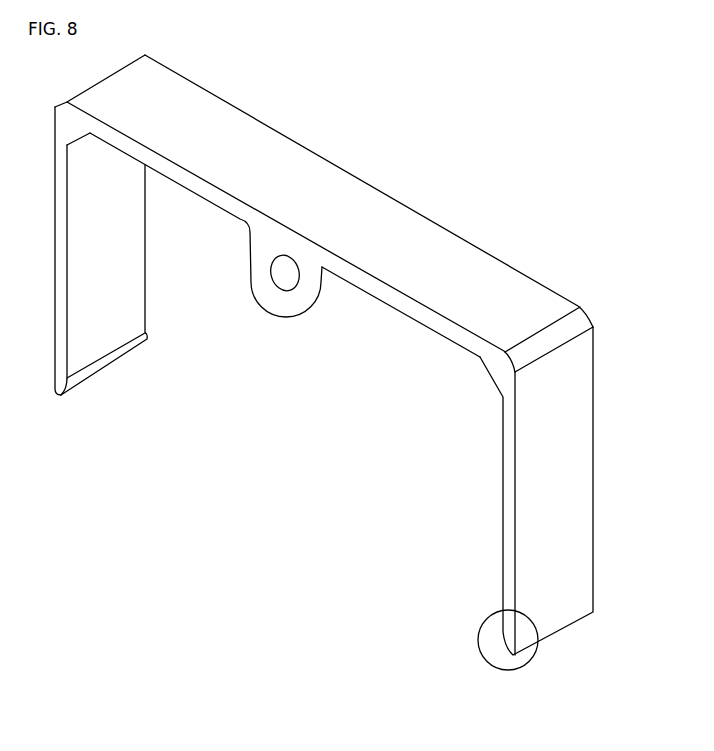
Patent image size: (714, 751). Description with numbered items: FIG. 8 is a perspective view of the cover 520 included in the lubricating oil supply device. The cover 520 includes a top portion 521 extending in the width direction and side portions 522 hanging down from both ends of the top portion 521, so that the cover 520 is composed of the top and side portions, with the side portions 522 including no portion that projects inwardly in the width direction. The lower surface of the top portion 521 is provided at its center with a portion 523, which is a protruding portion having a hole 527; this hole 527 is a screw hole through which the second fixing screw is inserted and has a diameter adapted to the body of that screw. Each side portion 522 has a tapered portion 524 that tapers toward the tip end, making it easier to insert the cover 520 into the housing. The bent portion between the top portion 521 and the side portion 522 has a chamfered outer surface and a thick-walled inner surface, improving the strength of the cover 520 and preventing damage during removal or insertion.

The cover 520 is at (378, 128).
The top portion 521 is at (423, 238).
The side portion 522 is at (573, 483).
The portion 523 is at (333, 290).
The tapered portion 524 is at (497, 657).
The hole 527 is at (285, 278).